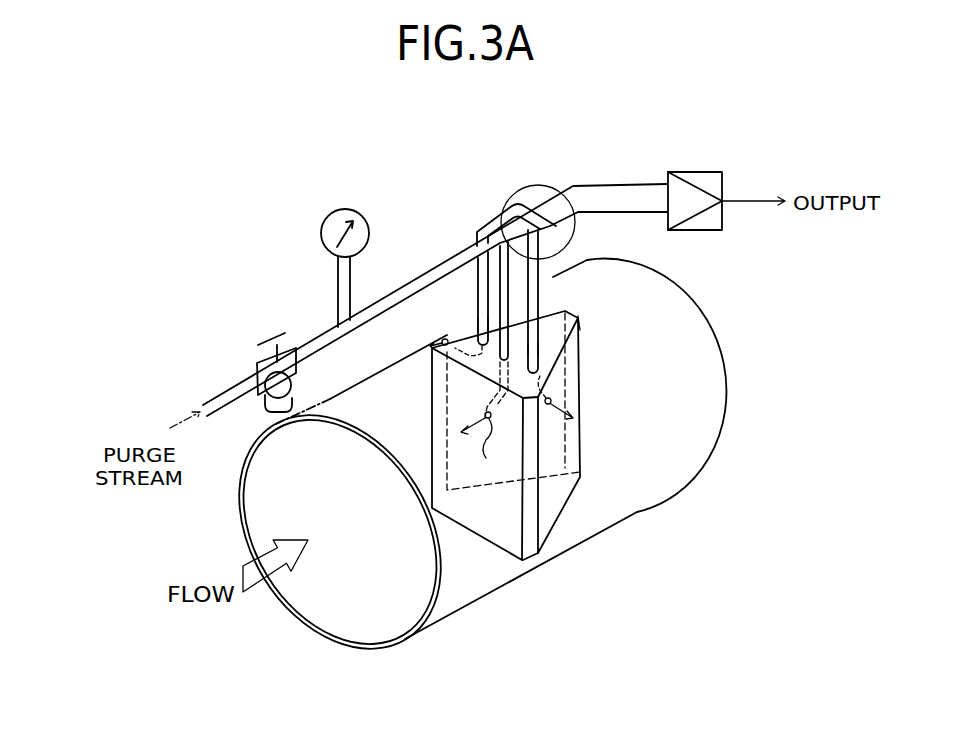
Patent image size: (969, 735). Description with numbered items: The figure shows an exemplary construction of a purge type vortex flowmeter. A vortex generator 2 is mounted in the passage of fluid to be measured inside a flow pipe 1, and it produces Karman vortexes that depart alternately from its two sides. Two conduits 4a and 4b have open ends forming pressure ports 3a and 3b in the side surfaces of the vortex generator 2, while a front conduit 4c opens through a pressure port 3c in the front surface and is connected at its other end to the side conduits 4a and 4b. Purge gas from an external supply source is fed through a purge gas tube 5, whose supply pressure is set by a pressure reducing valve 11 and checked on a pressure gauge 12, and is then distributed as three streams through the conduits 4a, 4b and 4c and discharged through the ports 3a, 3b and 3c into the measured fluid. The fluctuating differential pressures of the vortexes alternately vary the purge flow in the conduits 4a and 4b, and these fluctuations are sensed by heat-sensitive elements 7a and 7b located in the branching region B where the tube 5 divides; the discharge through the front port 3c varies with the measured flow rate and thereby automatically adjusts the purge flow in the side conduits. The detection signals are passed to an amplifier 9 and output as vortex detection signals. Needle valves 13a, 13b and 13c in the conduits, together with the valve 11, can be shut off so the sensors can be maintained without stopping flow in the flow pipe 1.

The flow pipe 1 is at (579, 539).
The vortex generator 2 is at (582, 466).
The pressure port 3a is at (438, 343).
The pressure port 3b is at (552, 402).
The pressure port 3c is at (484, 422).
The conduit 4a is at (478, 326).
The conduit 4b is at (532, 349).
The front conduit 4c is at (581, 323).
The purge gas tube 5 is at (390, 304).
The heat-sensitive element 7a is at (529, 186).
The heat-sensitive element 7b is at (560, 235).
The amplifier 9 is at (708, 172).
The valve 11 is at (258, 364).
The pressure gauge 12 is at (322, 230).
The needle valve 13a is at (492, 270).
The needle valve 13b is at (502, 305).
The needle valve 13c is at (540, 268).
The junction region B is at (507, 205).